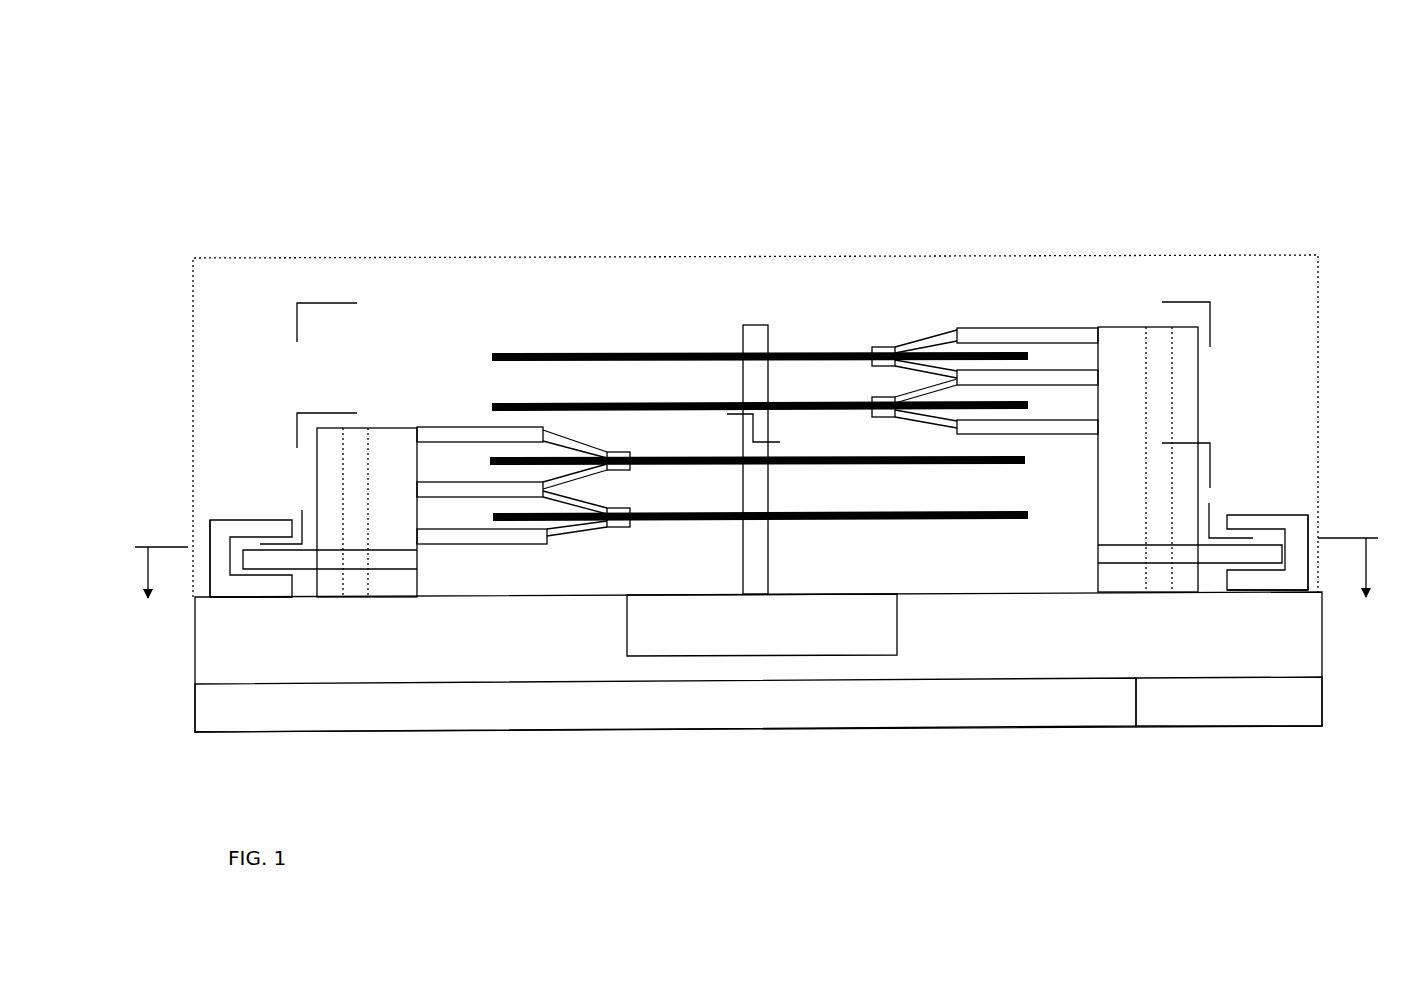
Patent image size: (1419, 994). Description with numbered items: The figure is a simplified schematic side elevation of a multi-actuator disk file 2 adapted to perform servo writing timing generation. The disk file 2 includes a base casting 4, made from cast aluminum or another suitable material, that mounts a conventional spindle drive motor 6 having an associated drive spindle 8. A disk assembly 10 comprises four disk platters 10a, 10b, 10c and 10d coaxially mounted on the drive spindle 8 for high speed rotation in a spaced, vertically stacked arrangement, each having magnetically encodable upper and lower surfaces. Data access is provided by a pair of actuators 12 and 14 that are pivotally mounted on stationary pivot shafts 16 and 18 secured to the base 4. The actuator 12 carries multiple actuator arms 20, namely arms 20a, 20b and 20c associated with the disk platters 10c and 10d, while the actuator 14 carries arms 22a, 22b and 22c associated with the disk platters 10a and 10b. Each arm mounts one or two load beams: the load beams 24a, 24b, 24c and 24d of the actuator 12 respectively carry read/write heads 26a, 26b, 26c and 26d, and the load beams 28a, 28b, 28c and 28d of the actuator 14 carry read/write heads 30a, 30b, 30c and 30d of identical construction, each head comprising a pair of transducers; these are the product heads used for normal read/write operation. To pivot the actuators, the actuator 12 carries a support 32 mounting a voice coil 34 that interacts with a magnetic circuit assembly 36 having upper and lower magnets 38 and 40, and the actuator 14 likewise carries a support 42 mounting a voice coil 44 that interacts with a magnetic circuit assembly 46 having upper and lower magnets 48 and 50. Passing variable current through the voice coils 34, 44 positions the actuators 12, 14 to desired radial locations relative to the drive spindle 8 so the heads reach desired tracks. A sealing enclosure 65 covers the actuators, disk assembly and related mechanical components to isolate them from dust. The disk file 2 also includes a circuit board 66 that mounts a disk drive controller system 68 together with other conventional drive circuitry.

The disk file 2 is at (337, 227).
The base casting 4 is at (195, 656).
The spindle drive motor 6 is at (897, 623).
The drive spindle 8 is at (760, 325).
The disk assembly 10 is at (665, 330).
The disk platter 10a is at (725, 353).
The disk platter 10b is at (728, 402).
The disk platter 10c is at (730, 457).
The disk platter 10d is at (727, 512).
The actuator 12 is at (382, 427).
The actuator 14 is at (1130, 322).
The stationary pivot shaft 16 is at (370, 565).
The stationary pivot shaft 18 is at (1145, 470).
The actuator arms 20 is at (453, 400).
The actuator arm 20a is at (448, 427).
The actuator arm 20b is at (470, 480).
The actuator arm 20c is at (475, 528).
The actuator arm 22a is at (1025, 327).
The actuator arm 22b is at (1035, 369).
The actuator arm 22c is at (1037, 418).
The load beam 24a is at (570, 442).
The load beam 24b is at (588, 471).
The load beam 24c is at (588, 502).
The load beam 24d is at (588, 533).
The read/write head 26a is at (632, 452).
The read/write head 26b is at (633, 468).
The read/write head 26c is at (635, 512).
The read/write head 26d is at (641, 535).
The load beam 28a is at (913, 342).
The load beam 28b is at (946, 372).
The load beam 28c is at (905, 392).
The load beam 28d is at (927, 420).
The read/write head 30a is at (872, 345).
The read/write head 30b is at (872, 363).
The read/write head 30c is at (872, 402).
The read/write head 30d is at (872, 413).
The support 32 is at (330, 595).
The voice coil 34 is at (297, 563).
The magnetic circuit assembly 36 is at (210, 531).
The upper magnet 38 is at (248, 520).
The lower magnet 40 is at (253, 590).
The support 42 is at (1190, 597).
The voice coil 44 is at (1227, 553).
The magnetic circuit assembly 46 is at (1310, 518).
The upper magnet 48 is at (1252, 515).
The lower magnet 50 is at (1273, 585).
The sealing enclosure 65 is at (758, 258).
The circuit board 66 is at (462, 720).
The disk drive controller system 68 is at (1208, 716).